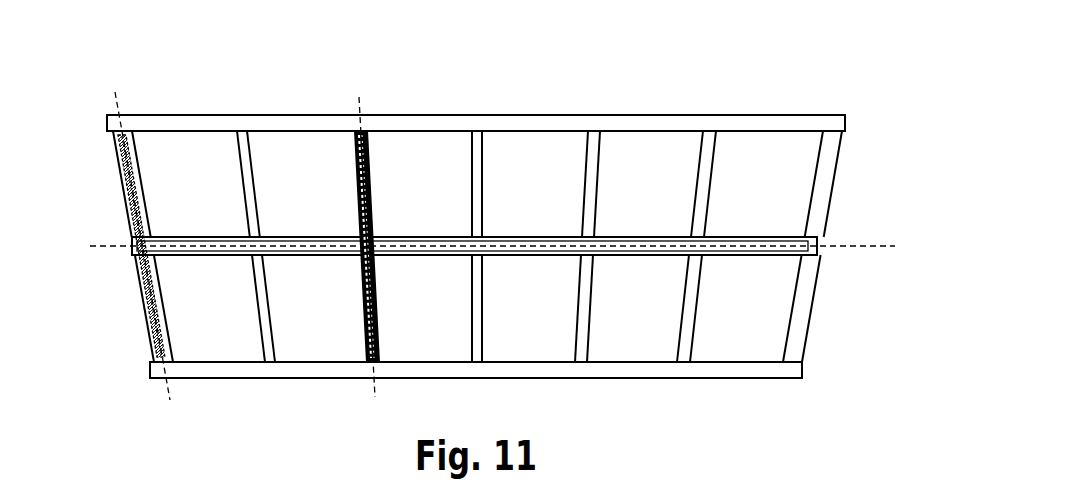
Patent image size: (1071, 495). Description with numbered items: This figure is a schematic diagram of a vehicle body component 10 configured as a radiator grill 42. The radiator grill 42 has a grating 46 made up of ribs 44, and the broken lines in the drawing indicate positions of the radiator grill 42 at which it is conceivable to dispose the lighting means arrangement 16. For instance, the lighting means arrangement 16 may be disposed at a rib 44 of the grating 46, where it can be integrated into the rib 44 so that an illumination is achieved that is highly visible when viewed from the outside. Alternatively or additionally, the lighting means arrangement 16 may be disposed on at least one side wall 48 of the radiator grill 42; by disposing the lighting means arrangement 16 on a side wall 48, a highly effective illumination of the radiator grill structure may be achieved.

The vehicle body component 10 is at (745, 92).
The lighting means arrangement 16 is at (130, 185).
The radiator grill 42 is at (201, 110).
The rib 44 is at (247, 180).
The grating 46 is at (489, 226).
The side wall 48 is at (142, 273).